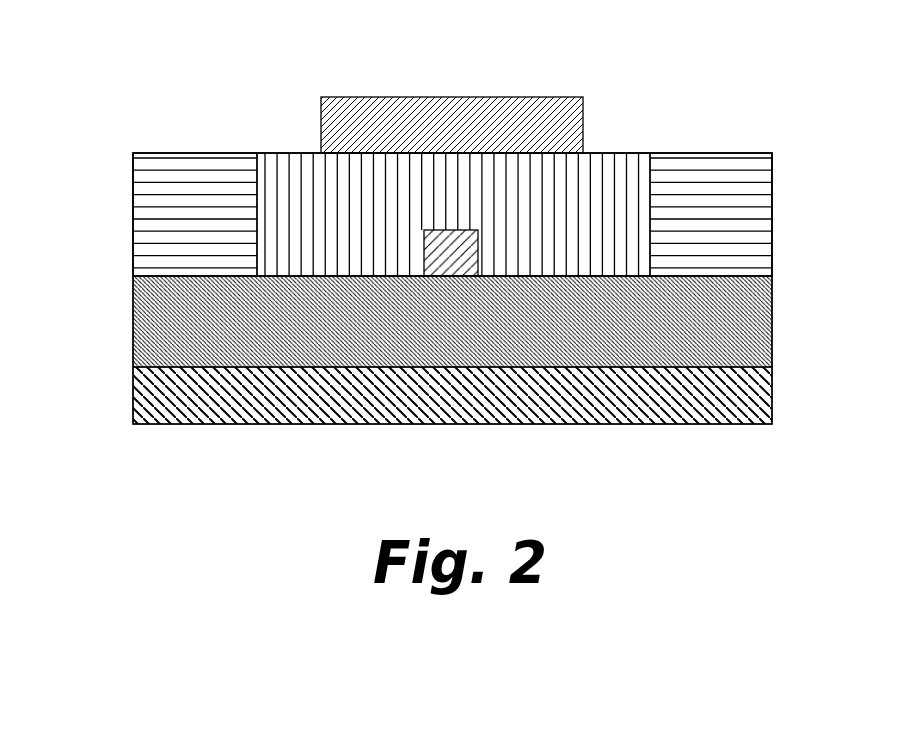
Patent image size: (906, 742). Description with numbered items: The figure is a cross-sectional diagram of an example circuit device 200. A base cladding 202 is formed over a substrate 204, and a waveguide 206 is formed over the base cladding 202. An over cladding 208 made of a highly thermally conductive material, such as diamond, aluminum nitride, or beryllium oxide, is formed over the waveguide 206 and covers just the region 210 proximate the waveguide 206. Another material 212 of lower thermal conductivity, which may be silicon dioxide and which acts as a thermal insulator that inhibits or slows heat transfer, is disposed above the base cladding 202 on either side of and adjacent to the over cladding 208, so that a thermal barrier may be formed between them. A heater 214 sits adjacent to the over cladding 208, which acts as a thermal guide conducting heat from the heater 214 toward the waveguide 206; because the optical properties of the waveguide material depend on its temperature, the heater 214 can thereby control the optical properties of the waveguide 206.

The circuit device 200 is at (100, 110).
The base cladding 202 is at (168, 333).
The substrate 204 is at (168, 394).
The waveguide 206 is at (462, 245).
The over cladding 208 is at (286, 153).
The region proximate the waveguide 210 is at (637, 142).
The material of lower thermal conductivity 212 is at (158, 224).
The heater 214 is at (372, 106).